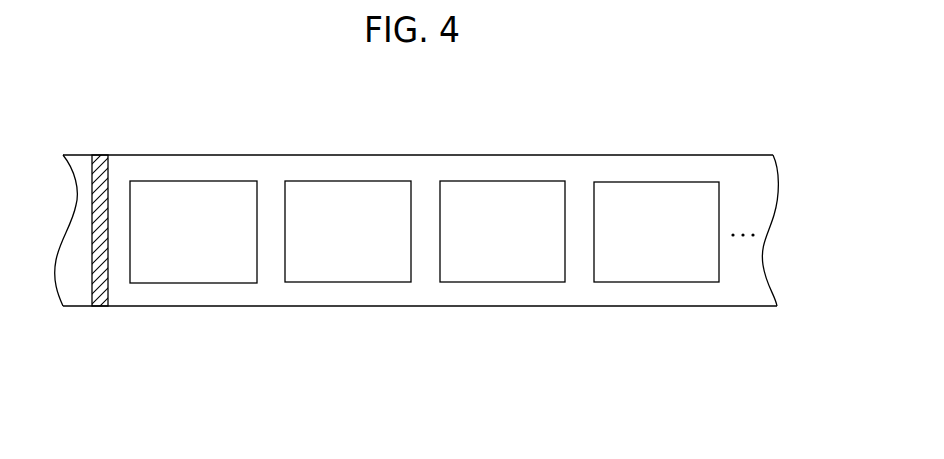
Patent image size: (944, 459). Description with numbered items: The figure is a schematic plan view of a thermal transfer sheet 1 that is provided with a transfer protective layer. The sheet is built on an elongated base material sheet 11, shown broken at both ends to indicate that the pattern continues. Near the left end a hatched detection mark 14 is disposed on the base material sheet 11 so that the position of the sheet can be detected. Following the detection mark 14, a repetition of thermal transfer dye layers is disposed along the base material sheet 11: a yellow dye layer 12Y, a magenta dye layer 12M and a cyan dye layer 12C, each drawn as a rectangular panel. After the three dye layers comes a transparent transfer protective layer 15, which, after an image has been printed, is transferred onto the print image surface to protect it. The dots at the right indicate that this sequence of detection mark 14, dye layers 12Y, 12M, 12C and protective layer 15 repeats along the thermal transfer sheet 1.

The thermal transfer sheet 1 is at (704, 111).
The base material sheet 11 is at (752, 268).
The yellow dye layer 12Y is at (182, 215).
The magenta dye layer 12M is at (342, 217).
The cyan dye layer 12C is at (508, 212).
The detection mark 14 is at (100, 172).
The transfer protective layer 15 is at (652, 213).